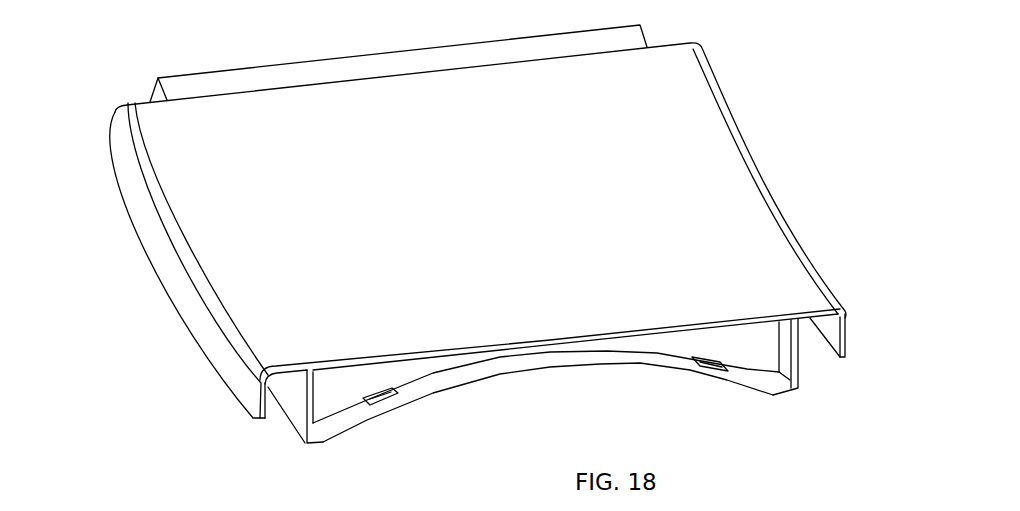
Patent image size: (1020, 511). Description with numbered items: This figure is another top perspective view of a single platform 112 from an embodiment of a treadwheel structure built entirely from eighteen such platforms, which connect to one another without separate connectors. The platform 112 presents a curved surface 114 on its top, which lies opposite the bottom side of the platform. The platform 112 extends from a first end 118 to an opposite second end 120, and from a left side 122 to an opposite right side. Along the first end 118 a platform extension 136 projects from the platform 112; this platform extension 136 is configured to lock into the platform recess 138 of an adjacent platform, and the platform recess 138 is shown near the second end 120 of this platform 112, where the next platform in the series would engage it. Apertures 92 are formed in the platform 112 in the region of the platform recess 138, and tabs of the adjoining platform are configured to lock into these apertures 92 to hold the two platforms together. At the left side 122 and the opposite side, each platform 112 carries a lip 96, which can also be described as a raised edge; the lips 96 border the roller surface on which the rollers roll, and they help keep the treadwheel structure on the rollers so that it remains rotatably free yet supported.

The platform 112 is at (784, 73).
The curved surface 114 is at (413, 160).
The first end 118 is at (295, 85).
The platform extension 136 is at (197, 78).
The lip 96 is at (168, 257).
The left side 122 is at (290, 398).
The second end 120 is at (338, 388).
The platform recess 138 is at (477, 372).
The aperture 92 is at (388, 397).